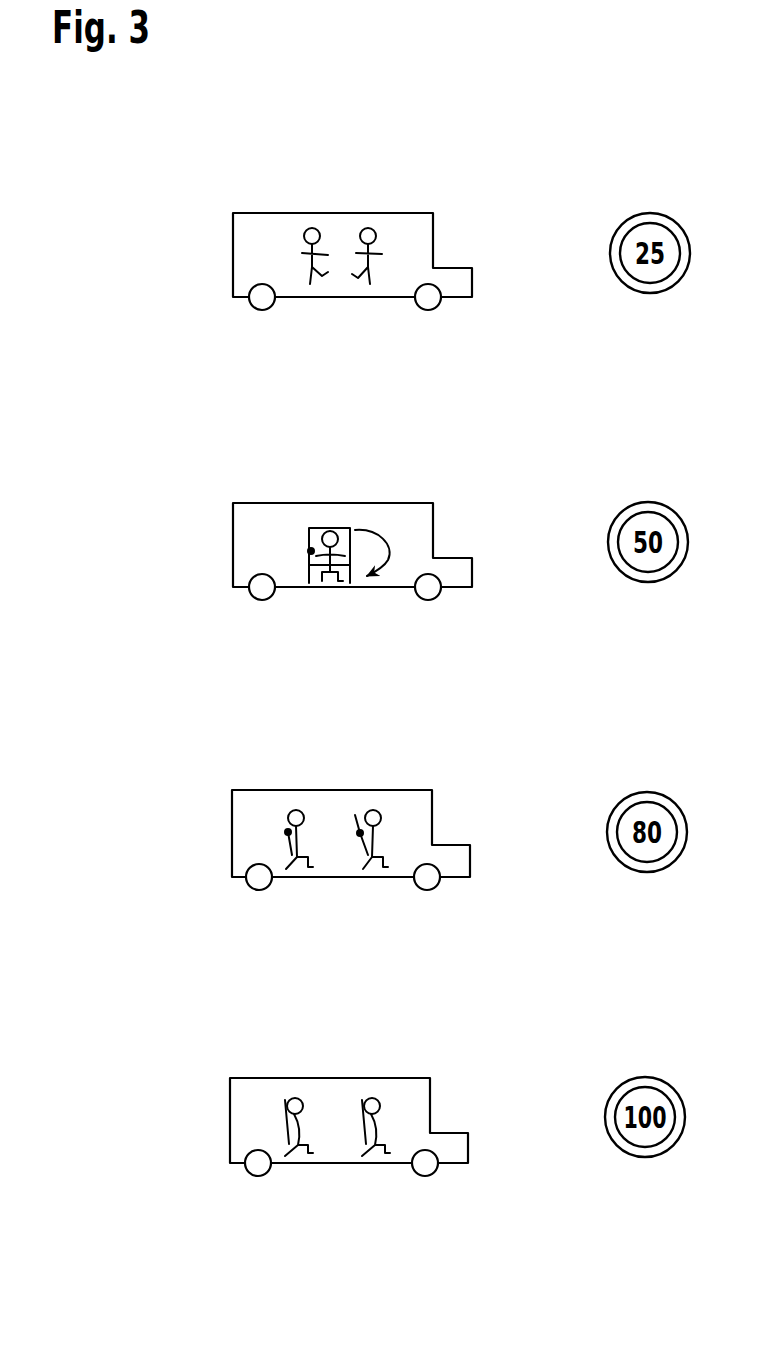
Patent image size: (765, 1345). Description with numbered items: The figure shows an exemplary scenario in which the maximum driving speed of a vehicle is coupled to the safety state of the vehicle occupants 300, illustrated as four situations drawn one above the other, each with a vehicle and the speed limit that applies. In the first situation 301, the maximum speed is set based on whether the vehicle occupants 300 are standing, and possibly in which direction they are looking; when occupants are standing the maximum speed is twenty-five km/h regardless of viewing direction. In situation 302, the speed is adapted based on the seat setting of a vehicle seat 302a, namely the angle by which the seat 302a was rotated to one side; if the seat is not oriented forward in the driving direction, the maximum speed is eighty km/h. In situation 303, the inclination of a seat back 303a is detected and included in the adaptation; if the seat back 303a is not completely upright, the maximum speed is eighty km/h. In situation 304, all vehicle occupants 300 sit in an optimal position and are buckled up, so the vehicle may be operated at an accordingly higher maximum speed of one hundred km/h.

The vehicle occupants 300 is at (370, 228).
The first situation 301 is at (190, 235).
The situation 302 is at (190, 525).
The vehicle seat 302a is at (318, 527).
The situation 303 is at (190, 810).
The seat back 303a is at (357, 817).
The situation 304 is at (190, 1098).